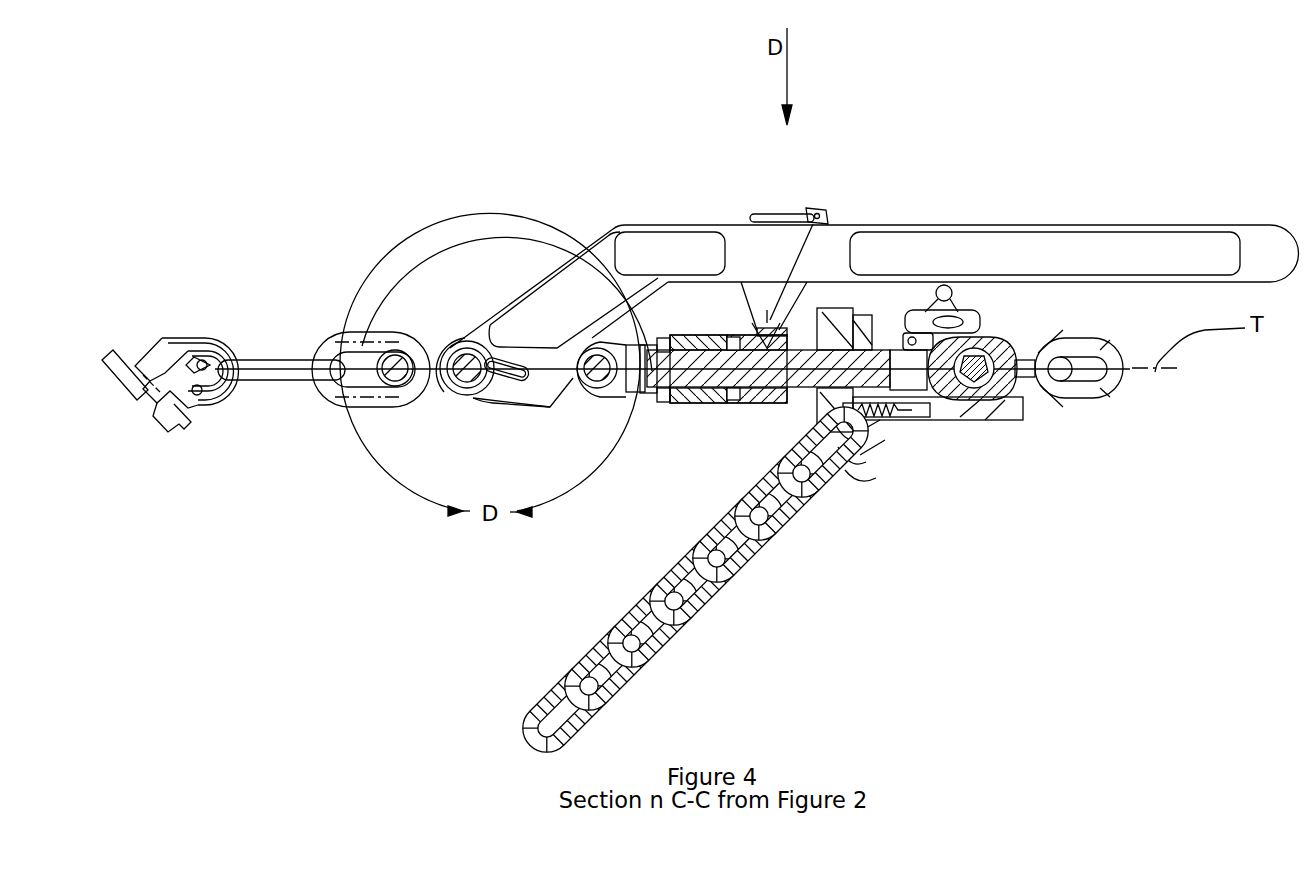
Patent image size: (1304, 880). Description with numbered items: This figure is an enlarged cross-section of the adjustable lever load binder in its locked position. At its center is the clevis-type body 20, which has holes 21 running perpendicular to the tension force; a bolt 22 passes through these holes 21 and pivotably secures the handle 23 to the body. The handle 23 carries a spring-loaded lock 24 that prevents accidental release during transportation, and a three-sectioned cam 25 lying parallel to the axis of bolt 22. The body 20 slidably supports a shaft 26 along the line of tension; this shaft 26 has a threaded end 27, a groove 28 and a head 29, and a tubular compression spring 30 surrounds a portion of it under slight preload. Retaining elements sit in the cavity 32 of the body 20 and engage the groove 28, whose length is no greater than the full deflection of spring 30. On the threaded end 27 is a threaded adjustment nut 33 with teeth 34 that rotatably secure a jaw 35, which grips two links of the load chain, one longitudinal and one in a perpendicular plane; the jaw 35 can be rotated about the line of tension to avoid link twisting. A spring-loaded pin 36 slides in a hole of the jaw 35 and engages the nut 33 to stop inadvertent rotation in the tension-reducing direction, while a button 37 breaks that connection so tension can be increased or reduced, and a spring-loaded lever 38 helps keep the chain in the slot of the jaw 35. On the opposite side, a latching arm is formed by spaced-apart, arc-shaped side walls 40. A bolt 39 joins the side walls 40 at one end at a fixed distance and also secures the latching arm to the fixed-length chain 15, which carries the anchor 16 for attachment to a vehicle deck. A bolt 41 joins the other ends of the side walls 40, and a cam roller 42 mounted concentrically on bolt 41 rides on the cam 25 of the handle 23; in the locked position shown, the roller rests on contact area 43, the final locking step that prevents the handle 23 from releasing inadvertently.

The anchor 16 is at (142, 345).
The chain 15 is at (278, 343).
The bolt 39 is at (373, 342).
The holes 21 is at (452, 342).
The bolt 22 is at (473, 342).
The cam roller 42 is at (580, 343).
The side walls 40 is at (505, 265).
The handle 23 is at (1023, 250).
The bolt 41 is at (597, 345).
The tubular compression spring 30 is at (645, 343).
The clevis-type body 20 is at (853, 423).
The cavity 32 is at (683, 347).
The head 29 is at (645, 400).
The shaft 26 is at (682, 402).
The spring-loaded lock 24 is at (740, 330).
The threaded end 27 is at (835, 307).
The threaded adjustment nut 33 is at (862, 335).
The spring-loaded lever 38 is at (932, 305).
The button 37 is at (900, 418).
The teeth 34 is at (935, 402).
The jaw 35 is at (988, 420).
The spring-loaded pin 36 is at (877, 422).
The groove 28 is at (773, 420).
The three-sectioned cam 25 is at (510, 398).
The contact area 43 is at (522, 400).